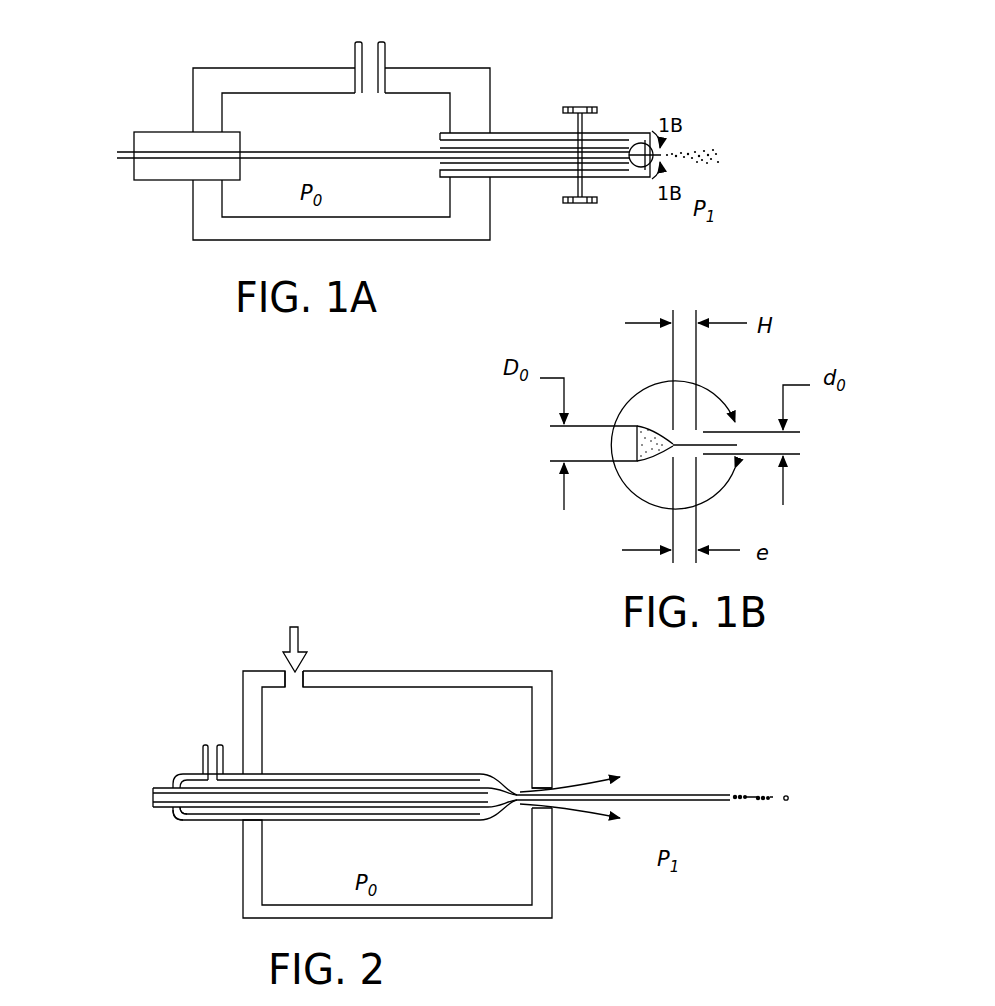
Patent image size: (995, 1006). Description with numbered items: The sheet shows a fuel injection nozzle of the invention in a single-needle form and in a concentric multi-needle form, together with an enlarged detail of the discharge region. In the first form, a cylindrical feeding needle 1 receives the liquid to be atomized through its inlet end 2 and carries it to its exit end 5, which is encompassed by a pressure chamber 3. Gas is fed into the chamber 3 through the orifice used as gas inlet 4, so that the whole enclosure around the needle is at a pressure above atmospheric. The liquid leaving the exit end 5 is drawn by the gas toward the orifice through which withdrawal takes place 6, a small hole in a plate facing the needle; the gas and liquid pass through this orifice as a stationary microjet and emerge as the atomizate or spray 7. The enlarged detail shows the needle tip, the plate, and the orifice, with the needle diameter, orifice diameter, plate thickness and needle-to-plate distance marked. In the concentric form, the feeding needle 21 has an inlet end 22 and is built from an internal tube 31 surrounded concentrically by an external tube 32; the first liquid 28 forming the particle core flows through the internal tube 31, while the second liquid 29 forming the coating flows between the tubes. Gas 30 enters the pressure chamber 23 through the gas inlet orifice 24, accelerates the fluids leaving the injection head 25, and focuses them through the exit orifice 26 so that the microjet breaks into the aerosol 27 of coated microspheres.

In FIG. 1A, the feeding needle 1 is at (316, 152).
In FIG. 1A, the end of the feeding needle used to insert the liquid 2 is at (112, 153).
In FIG. 1A, the pressure chamber 3 is at (387, 217).
In FIG. 1A, the orifice used as gas inlet 4 is at (372, 37).
In FIG. 1B, the end of the feeding needle used to evacuate the liquid 5 is at (594, 460).
In FIG. 1B, the orifice through which withdrawal takes place 6 is at (720, 427).
In FIG. 1A, the atomizate (spray) 7 is at (727, 168).
In FIG. 2, the feeding needle 21 is at (351, 774).
In FIG. 2, the end of the feeding needle used to insert the liquids 22 is at (207, 671).
In FIG. 2, the pressure chamber 23 is at (481, 892).
In FIG. 2, the orifice used as gas inlet 24 is at (306, 671).
In FIG. 2, the end of the feeding needle used to evacuate the liquid 25 is at (520, 782).
In FIG. 2, the orifice through which withdrawal takes place 26 is at (558, 790).
In FIG. 2, the atomizate (spray) or aerosol 27 is at (797, 785).
In FIG. 2, the first liquid to be atomized 28 is at (148, 795).
In FIG. 2, the second liquid to be atomized 29 is at (214, 743).
In FIG. 2, the gas for creation of microjet 30 is at (291, 631).
In FIG. 2, the internal tube of feeding needle 31 is at (179, 820).
In FIG. 2, the external tube of feeding needle 32 is at (224, 818).